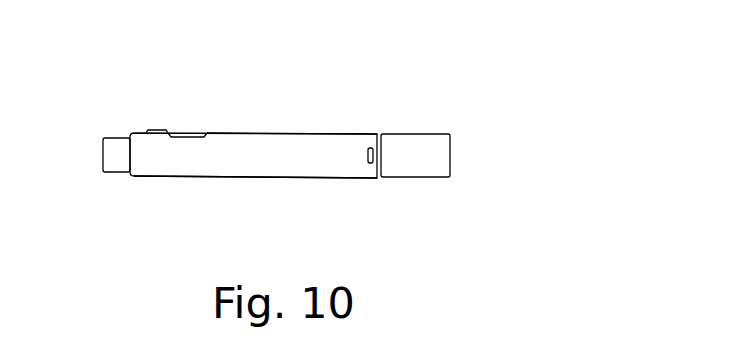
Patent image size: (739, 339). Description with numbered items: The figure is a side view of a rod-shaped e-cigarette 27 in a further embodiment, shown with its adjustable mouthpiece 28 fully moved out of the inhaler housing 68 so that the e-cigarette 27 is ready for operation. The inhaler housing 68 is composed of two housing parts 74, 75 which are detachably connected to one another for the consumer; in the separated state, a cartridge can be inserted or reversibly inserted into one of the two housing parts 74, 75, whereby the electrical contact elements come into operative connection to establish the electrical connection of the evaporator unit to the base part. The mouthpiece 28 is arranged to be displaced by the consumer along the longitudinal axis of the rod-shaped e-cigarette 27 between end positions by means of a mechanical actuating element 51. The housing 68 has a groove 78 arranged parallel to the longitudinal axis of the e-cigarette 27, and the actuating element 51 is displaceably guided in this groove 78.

The rod-shaped e-cigarette 27 is at (282, 182).
The adjustable mouthpiece 28 is at (117, 135).
The mechanical actuating element 51 is at (160, 130).
The inhaler housing 68 is at (303, 133).
The housing part 74 is at (188, 180).
The housing part 75 is at (413, 180).
The groove 78 is at (183, 132).